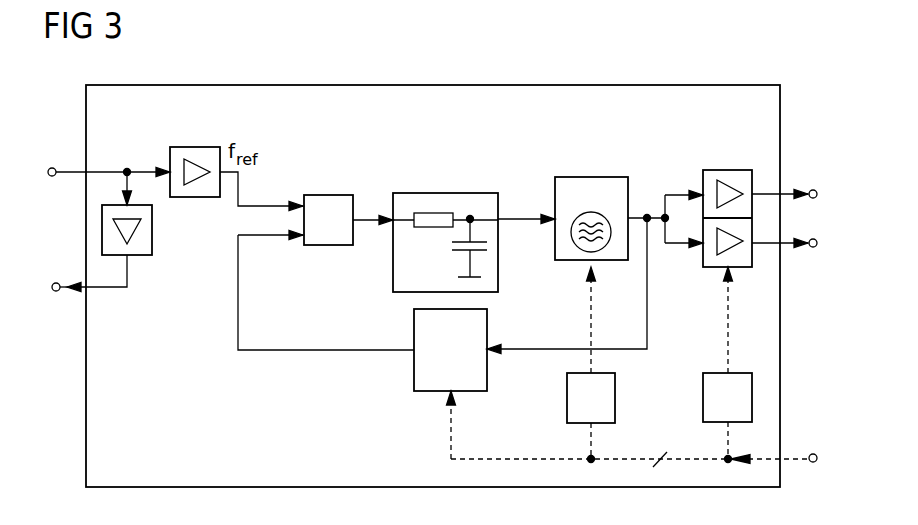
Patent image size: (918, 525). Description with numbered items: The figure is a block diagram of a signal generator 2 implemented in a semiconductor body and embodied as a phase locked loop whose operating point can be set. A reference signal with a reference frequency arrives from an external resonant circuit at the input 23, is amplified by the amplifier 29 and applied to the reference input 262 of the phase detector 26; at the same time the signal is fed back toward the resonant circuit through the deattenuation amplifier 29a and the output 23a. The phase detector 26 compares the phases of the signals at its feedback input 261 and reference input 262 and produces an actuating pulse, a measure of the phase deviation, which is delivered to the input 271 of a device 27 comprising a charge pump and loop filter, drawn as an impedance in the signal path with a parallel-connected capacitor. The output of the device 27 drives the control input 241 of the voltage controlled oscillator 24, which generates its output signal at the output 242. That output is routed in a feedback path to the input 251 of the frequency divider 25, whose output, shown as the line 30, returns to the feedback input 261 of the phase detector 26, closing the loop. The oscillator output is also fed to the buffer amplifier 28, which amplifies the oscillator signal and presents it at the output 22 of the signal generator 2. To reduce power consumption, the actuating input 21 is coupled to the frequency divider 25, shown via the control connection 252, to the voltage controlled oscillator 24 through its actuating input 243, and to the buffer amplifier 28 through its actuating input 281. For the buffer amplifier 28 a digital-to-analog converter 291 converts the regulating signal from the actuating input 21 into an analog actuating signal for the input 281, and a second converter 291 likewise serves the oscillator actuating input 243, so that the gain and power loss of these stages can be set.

The signal generator 2 is at (443, 85).
The actuating input 21 is at (814, 454).
The output 22 is at (817, 239).
The input 23 is at (52, 168).
The output 23a is at (56, 283).
The voltage controlled oscillator 24 is at (593, 177).
The control input 241 is at (554, 222).
The output 242 is at (638, 215).
The actuating input 243 is at (590, 266).
The frequency divider 25 is at (425, 392).
The input 251 is at (491, 355).
The divider control input 252 is at (455, 393).
The phase detector 26 is at (327, 195).
The feedback input 261 is at (303, 245).
The reference input 262 is at (298, 204).
The device comprising charge pump and loop filter 27 is at (447, 193).
The input 271 is at (392, 222).
The buffer amplifier 28 is at (738, 267).
The actuating input 281 is at (722, 267).
The amplifier 29 is at (194, 147).
The deattenuation amplifier 29a is at (140, 255).
The digital-to-analog converter 291 is at (703, 395).
The feedback line 30 is at (315, 350).